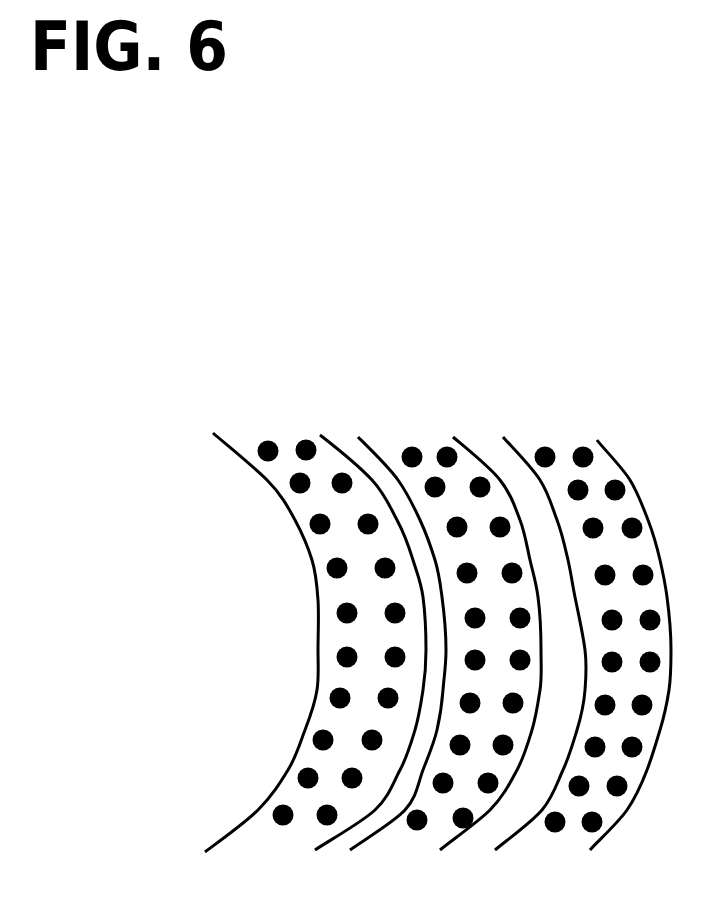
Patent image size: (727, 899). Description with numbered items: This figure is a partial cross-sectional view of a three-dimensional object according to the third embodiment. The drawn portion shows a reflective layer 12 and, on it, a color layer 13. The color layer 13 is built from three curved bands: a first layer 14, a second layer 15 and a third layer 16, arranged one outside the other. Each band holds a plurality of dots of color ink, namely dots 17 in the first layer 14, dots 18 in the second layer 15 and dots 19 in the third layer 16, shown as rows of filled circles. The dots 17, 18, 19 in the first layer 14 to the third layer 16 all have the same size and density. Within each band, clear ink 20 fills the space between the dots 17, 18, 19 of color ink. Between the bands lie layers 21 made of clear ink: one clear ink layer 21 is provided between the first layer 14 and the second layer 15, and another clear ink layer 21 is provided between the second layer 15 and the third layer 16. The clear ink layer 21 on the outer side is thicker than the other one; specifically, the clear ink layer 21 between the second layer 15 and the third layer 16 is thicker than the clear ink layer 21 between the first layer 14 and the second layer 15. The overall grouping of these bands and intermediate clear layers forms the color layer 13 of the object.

The reflective layer 12 is at (261, 642).
The color layer 13 is at (597, 335).
The first layer 14 is at (325, 389).
The second layer 15 is at (460, 390).
The third layer 16 is at (595, 390).
The dots of color ink 17 is at (268, 441).
The dots of color ink 18 is at (412, 447).
The dots of color ink 19 is at (546, 447).
The clear ink 20 is at (343, 518).
The clear ink layer 21 is at (378, 462).